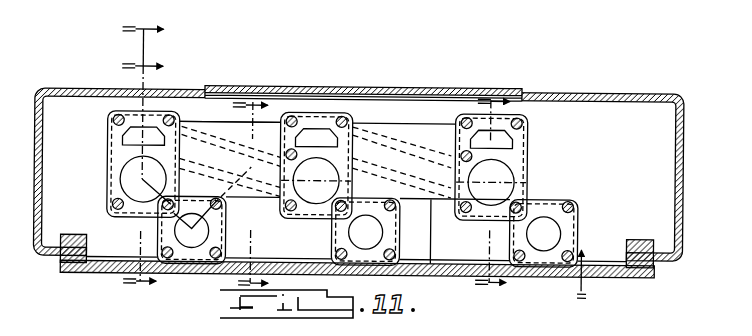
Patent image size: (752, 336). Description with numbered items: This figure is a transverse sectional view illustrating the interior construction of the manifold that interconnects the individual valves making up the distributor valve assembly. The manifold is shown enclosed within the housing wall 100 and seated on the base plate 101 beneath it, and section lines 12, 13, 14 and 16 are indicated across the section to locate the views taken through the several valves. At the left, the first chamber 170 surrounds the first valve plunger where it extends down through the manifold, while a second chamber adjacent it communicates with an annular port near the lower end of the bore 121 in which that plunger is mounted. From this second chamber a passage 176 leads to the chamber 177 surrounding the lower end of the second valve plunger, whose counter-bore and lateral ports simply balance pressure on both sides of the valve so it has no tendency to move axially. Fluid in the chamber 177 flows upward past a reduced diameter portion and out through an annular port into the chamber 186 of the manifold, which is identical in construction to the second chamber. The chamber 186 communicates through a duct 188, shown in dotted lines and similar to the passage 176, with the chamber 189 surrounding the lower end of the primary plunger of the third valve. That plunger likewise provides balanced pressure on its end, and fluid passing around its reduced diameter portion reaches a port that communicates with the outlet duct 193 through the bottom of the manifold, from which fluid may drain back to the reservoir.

The housing 100 is at (622, 95).
The base plate 101 is at (552, 272).
The bore 121 is at (133, 128).
The first chamber 170 is at (127, 175).
The passage 176 is at (252, 134).
The chamber 177 is at (313, 194).
The chamber 186 is at (318, 130).
The duct 188 is at (387, 146).
The chamber 189 is at (503, 170).
The outlet duct 193 is at (505, 130).
The section line 12- 12 is at (498, 98).
The section line 13- 13 is at (167, 180).
The section line 14- 14 is at (265, 173).
The section line 16- 16 is at (365, 159).